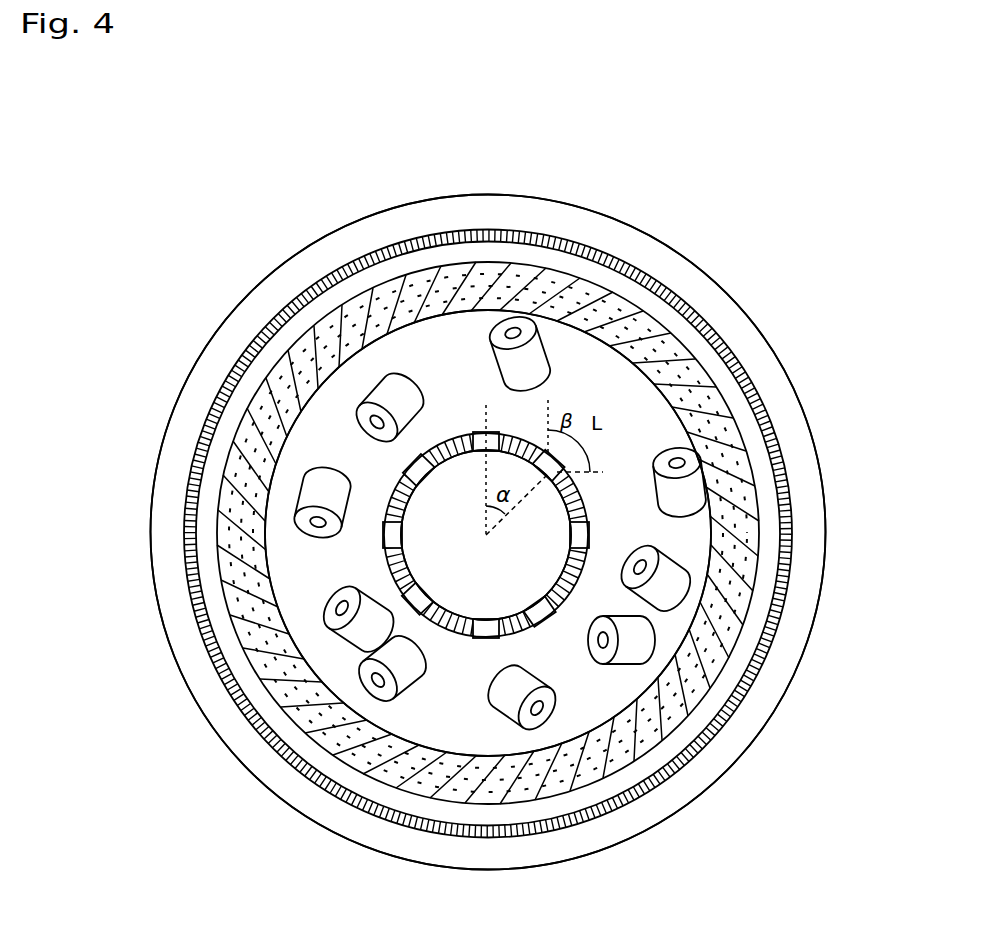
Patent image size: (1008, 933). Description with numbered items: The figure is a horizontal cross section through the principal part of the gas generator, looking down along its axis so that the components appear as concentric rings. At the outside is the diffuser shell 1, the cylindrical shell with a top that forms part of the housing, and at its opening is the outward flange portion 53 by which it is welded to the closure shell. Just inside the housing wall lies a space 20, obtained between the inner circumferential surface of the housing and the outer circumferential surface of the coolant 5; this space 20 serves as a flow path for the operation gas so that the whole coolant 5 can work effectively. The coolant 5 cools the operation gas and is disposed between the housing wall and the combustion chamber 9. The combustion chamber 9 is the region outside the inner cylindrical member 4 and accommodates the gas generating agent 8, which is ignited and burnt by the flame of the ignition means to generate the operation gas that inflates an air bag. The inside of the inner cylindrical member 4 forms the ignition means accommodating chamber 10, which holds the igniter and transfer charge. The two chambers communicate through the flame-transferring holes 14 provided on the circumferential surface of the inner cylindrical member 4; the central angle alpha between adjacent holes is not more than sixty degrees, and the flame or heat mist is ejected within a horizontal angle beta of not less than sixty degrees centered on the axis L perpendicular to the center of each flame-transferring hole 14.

The diffuser shell 1 is at (628, 260).
The inner cylindrical member 4 is at (389, 454).
The coolant 5 is at (258, 458).
The gas generating agent 8 is at (383, 393).
The combustion chamber 9 is at (438, 338).
The ignition means accommodating chamber 10 is at (518, 604).
The flame-transferring hole 14 is at (484, 628).
The space 20 is at (770, 528).
The outward flange portion 53 is at (737, 323).